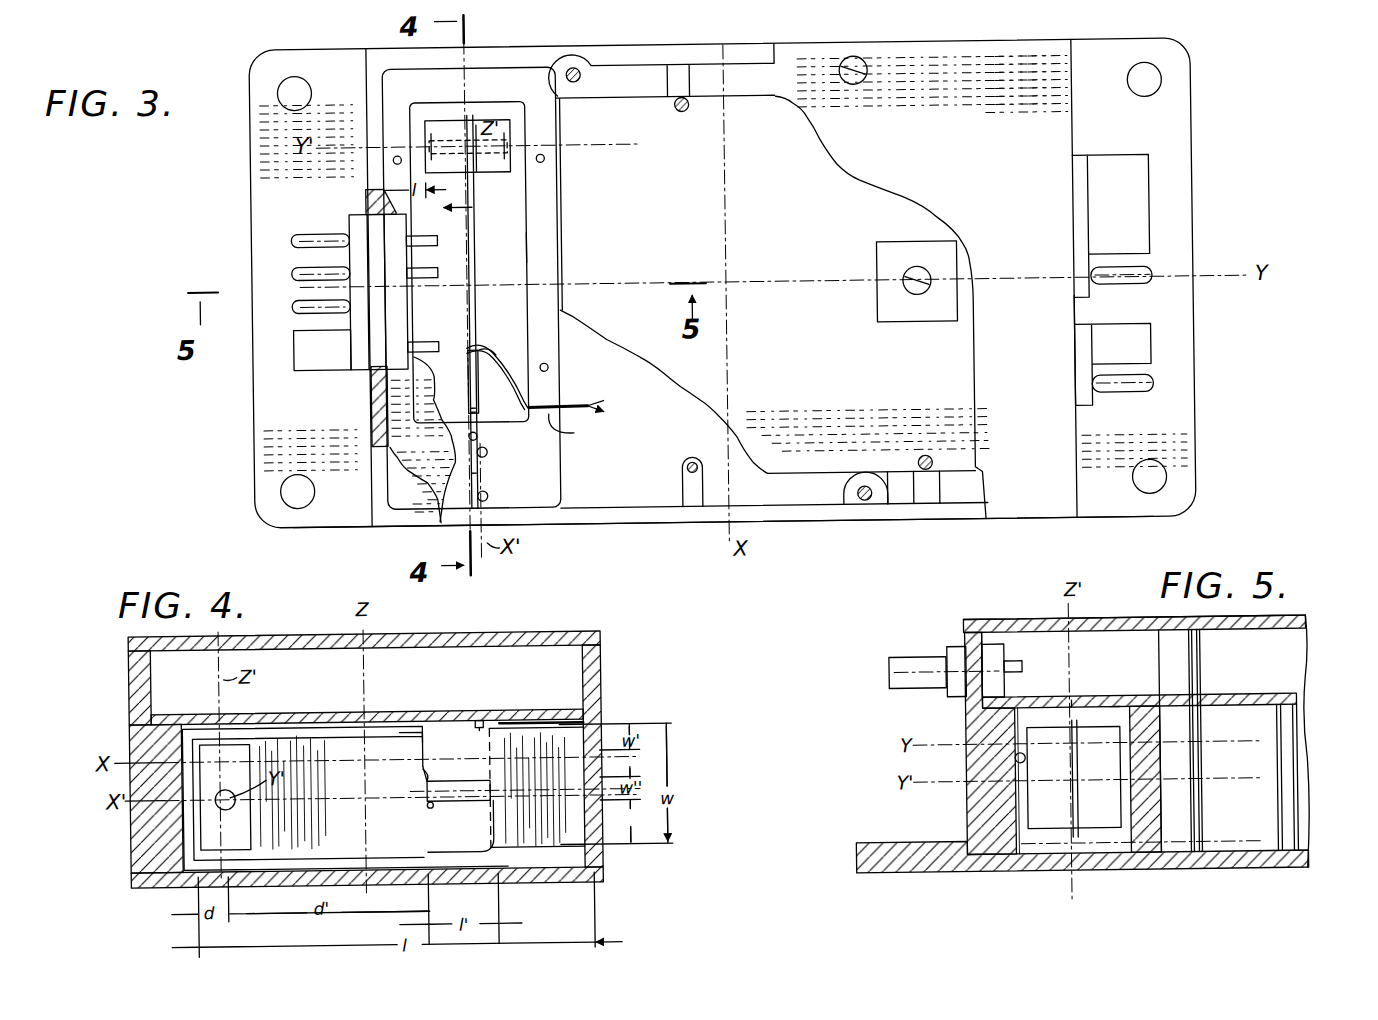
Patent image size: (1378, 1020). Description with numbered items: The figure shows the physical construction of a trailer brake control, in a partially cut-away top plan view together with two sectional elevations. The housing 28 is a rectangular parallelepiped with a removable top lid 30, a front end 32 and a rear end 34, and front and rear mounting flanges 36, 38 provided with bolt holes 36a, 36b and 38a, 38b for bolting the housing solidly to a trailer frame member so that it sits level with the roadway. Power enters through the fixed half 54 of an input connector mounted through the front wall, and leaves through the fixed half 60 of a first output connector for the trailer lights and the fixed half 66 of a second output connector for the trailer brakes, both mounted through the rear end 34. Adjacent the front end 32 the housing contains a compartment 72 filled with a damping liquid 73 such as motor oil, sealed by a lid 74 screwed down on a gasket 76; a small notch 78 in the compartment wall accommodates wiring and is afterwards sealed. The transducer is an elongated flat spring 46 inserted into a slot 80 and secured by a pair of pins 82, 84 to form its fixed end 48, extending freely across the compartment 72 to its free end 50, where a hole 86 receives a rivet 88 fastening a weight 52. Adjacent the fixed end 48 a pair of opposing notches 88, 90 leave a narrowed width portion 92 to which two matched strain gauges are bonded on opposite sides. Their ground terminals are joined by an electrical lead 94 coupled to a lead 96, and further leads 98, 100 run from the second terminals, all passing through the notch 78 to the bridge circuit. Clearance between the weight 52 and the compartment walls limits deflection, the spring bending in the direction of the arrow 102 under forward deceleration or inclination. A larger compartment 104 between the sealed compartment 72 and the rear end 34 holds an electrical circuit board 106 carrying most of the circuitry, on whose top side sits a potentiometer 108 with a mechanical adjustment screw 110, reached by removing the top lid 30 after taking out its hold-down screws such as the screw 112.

In FIG. 3, the housing 28 is at (660, 526).
In FIG. 4, the housing 28 is at (404, 634).
In FIG. 5, the housing 28 is at (1042, 617).
In FIG. 3, the removable top lid 30 is at (400, 508).
In FIG. 4, the removable top lid 30 is at (492, 634).
In FIG. 5, the removable top lid 30 is at (985, 620).
In FIG. 3, the front end 32 is at (369, 101).
In FIG. 5, the front end 32 is at (966, 731).
In FIG. 3, the rear end 34 is at (1076, 475).
In FIG. 3, the front mounting flange 36 is at (262, 413).
In FIG. 5, the front mounting flange 36 is at (860, 840).
In FIG. 3, the bolt hole 36a is at (298, 84).
In FIG. 3, the bolt hole 36b is at (292, 486).
In FIG. 3, the rear mounting flange 38 is at (1185, 387).
In FIG. 3, the bolt hole 38a is at (1150, 86).
In FIG. 3, the bolt hole 38b is at (1148, 490).
In FIG. 3, the elongated flat spring 46 is at (479, 270).
In FIG. 4, the elongated flat spring 46 is at (333, 722).
In FIG. 5, the elongated flat spring 46 is at (1078, 796).
In FIG. 3, the fixed end 48 is at (483, 475).
In FIG. 4, the fixed end 48 is at (588, 724).
In FIG. 3, the free end 50 is at (468, 98).
In FIG. 4, the free end 50 is at (190, 825).
In FIG. 3, the weight 52 is at (512, 163).
In FIG. 4, the weight 52 is at (200, 750).
In FIG. 5, the weight 52 is at (1035, 812).
In FIG. 3, the fixed half of input connector 54 is at (366, 368).
In FIG. 5, the fixed half of input connector 54 is at (956, 645).
In FIG. 3, the fixed half of first output connector 60 is at (1105, 160).
In FIG. 3, the fixed half of second output connector 66 is at (1092, 410).
In FIG. 3, the compartment 72 is at (513, 249).
In FIG. 5, the compartment 72 is at (1015, 757).
In FIG. 5, the damping liquid 73 is at (1082, 708).
In FIG. 3, the lid 74 is at (372, 202).
In FIG. 4, the lid 74 is at (562, 724).
In FIG. 5, the lid 74 is at (1118, 704).
In FIG. 4, the gasket 76 is at (526, 722).
In FIG. 3, the notch 78 is at (573, 431).
In FIG. 4, the notch 78 is at (480, 722).
In FIG. 3, the slot 80 is at (478, 435).
In FIG. 3, the pin 82 is at (486, 450).
In FIG. 3, the pin 84 is at (486, 493).
In FIG. 4, the hole 86 is at (215, 797).
In FIG. 3, the rivet 88 is at (480, 172).
In FIG. 4, the rivet 88 is at (422, 745).
In FIG. 4, the notch 90 is at (438, 834).
In FIG. 3, the narrowed width portion 92 is at (468, 376).
In FIG. 4, the narrowed width portion 92 is at (445, 782).
In FIG. 3, the electrical lead 94 is at (465, 343).
In FIG. 4, the electrical lead 94 is at (428, 808).
In FIG. 3, the electrical lead 96 is at (491, 345).
In FIG. 3, the electrical lead 98 is at (532, 378).
In FIG. 3, the electrical lead 100 is at (481, 409).
In FIG. 4, the electrical lead 100 is at (424, 774).
In FIG. 3, the arrow 102 is at (481, 203).
In FIG. 3, the compartment 104 is at (668, 437).
In FIG. 5, the compartment 104 is at (1260, 758).
In FIG. 3, the electrical circuit board 106 is at (806, 225).
In FIG. 5, the electrical circuit board 106 is at (1300, 700).
In FIG. 3, the potentiometer 108 is at (877, 306).
In FIG. 3, the mechanical adjustment screw 110 is at (912, 294).
In FIG. 3, the screw 112 is at (858, 60).